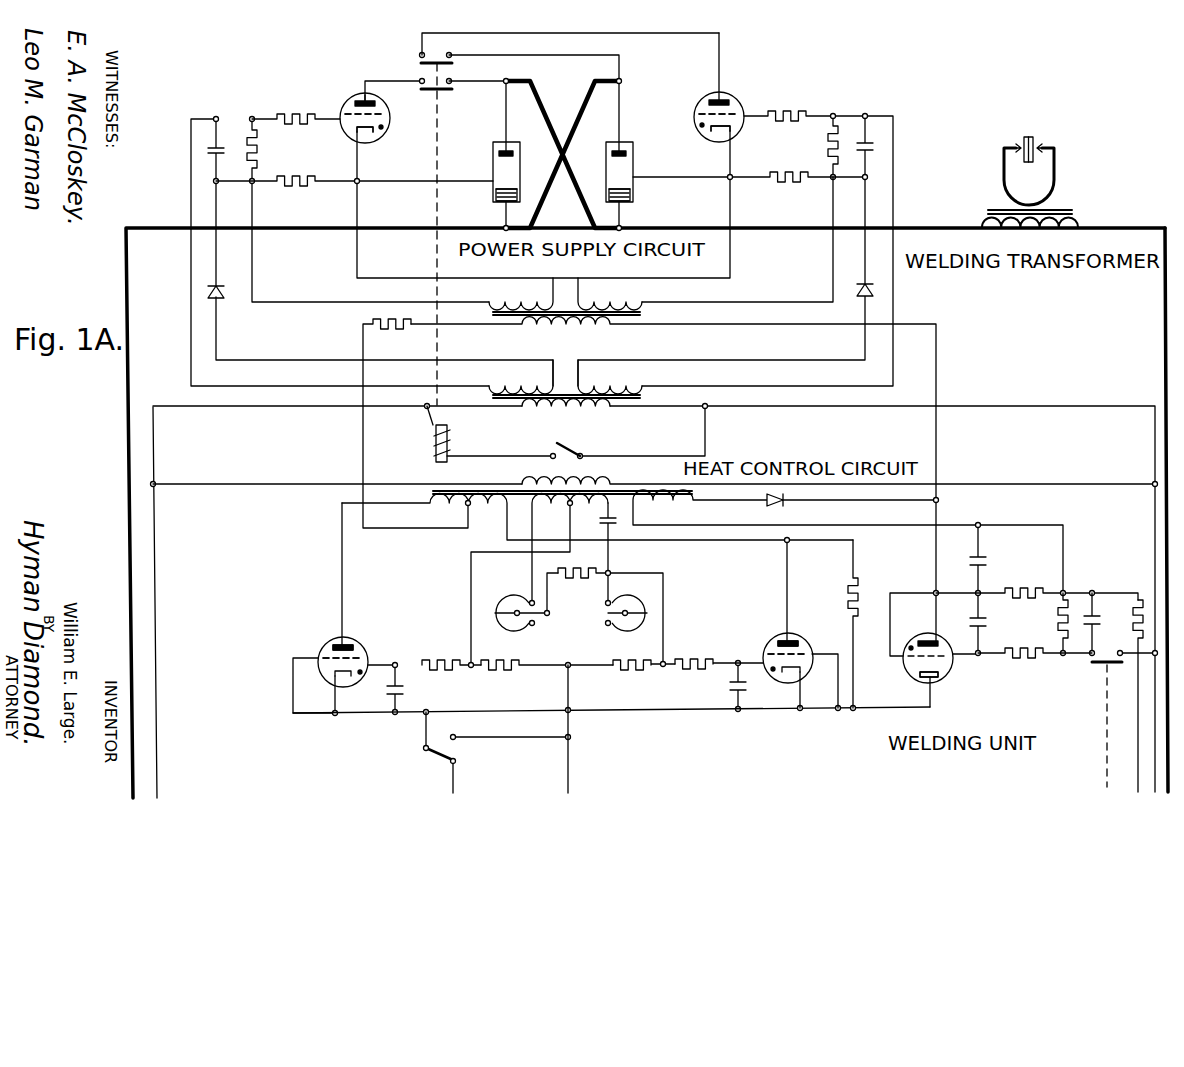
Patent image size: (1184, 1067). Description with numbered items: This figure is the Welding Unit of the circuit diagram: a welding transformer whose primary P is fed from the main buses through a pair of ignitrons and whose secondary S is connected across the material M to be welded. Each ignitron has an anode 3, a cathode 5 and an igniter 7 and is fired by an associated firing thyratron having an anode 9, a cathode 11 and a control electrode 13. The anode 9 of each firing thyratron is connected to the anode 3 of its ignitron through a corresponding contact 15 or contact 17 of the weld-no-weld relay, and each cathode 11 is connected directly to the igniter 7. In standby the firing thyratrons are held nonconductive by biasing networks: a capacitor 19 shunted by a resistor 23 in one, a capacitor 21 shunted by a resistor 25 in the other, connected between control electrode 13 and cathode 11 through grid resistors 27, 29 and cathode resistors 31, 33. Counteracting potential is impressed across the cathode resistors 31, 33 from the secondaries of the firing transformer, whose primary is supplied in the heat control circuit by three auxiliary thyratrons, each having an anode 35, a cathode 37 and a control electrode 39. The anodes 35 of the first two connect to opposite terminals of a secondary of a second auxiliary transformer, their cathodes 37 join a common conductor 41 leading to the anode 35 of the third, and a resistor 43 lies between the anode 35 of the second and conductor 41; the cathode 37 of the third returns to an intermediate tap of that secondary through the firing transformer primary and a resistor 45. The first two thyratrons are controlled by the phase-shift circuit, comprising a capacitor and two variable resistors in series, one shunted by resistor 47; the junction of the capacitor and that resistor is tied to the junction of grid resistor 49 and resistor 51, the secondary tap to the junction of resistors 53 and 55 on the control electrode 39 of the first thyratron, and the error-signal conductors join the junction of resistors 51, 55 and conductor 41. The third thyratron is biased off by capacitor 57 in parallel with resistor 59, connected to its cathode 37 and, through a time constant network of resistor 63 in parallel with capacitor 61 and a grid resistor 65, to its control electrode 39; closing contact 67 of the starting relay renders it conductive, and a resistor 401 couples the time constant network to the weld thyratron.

The anode 3 is at (511, 152).
The cathode 5 is at (518, 192).
The igniter 7 is at (496, 191).
The anode 9 is at (374, 103).
The cathode 11 is at (370, 134).
The control electrode 13 is at (387, 116).
The contact 15 is at (440, 91).
The contact 17 is at (438, 58).
The capacitor 19 is at (218, 152).
The capacitor 21 is at (869, 148).
The resistor 23 is at (257, 147).
The resistor 25 is at (827, 146).
The grid resistor 27 is at (305, 114).
The grid resistor 29 is at (788, 110).
The cathode resistor 31 is at (283, 186).
The cathode resistor 33 is at (782, 183).
The anode 35 is at (336, 645).
The cathode 37 is at (350, 678).
The control electrode 39 is at (366, 661).
The common conductor 41 is at (671, 711).
The resistor 43 is at (859, 593).
The resistor 45 is at (384, 334).
The resistor 47 is at (580, 580).
The grid resistor 49 is at (719, 651).
The resistor 51 is at (644, 655).
The resistor 53 is at (445, 652).
The resistor 55 is at (511, 660).
The capacitor 57 is at (984, 559).
The resistor 59 is at (1037, 582).
The capacitor 61 is at (1100, 623).
The resistor 63 is at (1057, 622).
The grid resistor 65 is at (1068, 667).
The contact 67 is at (1112, 674).
The resistor 401 is at (1134, 629).